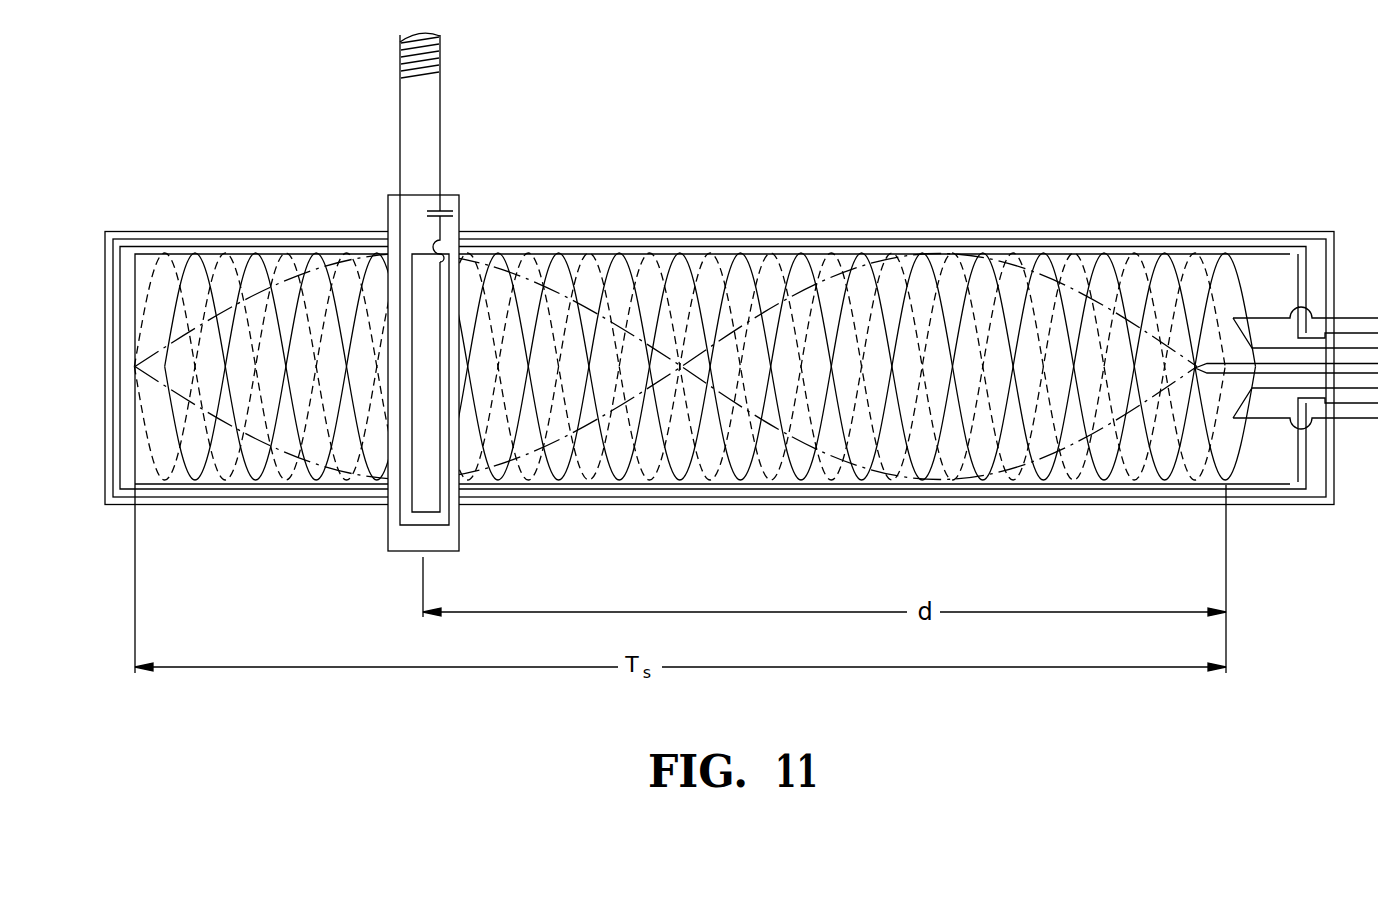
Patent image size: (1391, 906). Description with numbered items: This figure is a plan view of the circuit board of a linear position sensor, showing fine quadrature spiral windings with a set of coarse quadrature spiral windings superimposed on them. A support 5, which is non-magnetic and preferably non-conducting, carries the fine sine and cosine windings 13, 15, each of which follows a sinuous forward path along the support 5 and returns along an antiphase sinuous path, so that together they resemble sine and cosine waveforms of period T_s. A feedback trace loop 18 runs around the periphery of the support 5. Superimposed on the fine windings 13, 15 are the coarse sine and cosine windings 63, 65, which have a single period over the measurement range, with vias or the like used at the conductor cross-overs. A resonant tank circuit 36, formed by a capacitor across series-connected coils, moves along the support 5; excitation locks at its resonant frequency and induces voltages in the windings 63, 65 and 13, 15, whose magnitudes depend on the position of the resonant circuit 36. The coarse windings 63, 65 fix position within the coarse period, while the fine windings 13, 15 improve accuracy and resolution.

The support 5 is at (105, 438).
The sine winding 13 is at (1177, 265).
The cosine winding 15 is at (1085, 267).
The feedback trace loop 18 is at (1252, 497).
The resonant tank circuit 36 is at (364, 196).
The coarse sine winding 63 is at (995, 259).
The coarse cosine winding 65 is at (1265, 255).